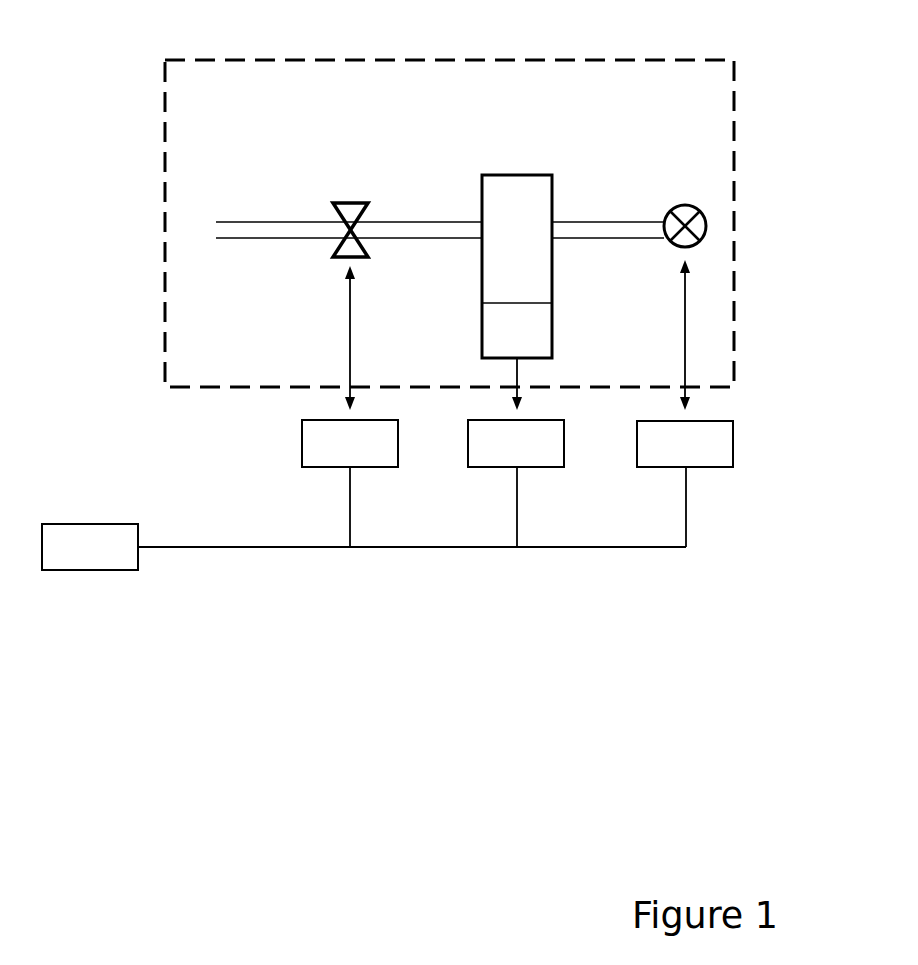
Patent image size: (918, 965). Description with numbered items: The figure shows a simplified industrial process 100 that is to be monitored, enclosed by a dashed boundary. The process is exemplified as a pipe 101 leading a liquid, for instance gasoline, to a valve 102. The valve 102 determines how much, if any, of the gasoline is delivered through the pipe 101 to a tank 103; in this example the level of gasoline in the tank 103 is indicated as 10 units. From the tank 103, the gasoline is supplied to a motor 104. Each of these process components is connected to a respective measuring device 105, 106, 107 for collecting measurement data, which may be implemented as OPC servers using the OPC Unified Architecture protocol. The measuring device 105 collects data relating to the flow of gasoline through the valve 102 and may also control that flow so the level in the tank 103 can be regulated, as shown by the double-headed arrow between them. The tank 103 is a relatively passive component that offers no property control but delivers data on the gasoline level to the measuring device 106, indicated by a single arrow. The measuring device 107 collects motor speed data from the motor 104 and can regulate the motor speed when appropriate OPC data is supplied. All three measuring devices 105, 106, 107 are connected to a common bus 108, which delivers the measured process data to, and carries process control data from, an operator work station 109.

The industrial process 100 is at (180, 58).
The pipe 101 is at (265, 215).
The valve 102 is at (352, 197).
The tank 103 is at (520, 160).
The level of gasoline 10 is at (539, 317).
The motor 104 is at (682, 195).
The measuring device 105 is at (350, 483).
The measuring device 106 is at (516, 483).
The measuring device 107 is at (685, 484).
The bus 108 is at (265, 545).
The operator work station 109 is at (90, 547).